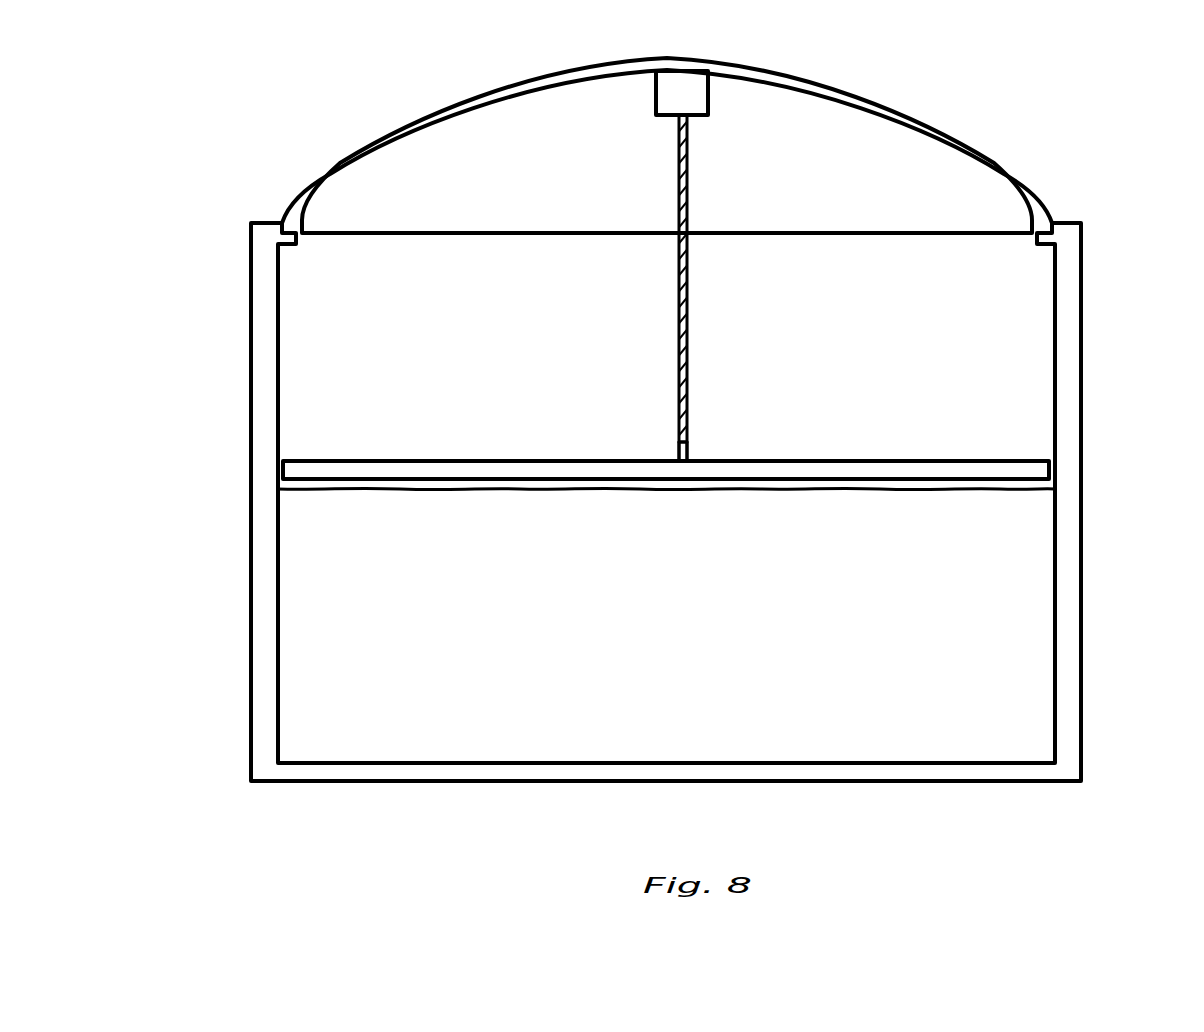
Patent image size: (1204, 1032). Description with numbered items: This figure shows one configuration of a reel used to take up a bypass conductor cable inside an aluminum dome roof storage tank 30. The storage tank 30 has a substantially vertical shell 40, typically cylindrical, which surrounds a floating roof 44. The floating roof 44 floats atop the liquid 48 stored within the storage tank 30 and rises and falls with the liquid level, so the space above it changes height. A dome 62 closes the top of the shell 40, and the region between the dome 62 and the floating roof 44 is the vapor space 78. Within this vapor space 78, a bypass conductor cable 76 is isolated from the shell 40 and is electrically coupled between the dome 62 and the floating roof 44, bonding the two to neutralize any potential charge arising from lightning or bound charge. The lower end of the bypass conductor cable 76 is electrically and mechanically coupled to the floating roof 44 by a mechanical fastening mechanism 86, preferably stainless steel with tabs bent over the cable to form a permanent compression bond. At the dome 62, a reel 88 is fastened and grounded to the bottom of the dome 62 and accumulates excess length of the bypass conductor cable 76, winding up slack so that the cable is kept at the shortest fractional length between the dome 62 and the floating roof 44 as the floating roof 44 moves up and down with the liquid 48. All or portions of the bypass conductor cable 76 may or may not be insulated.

The storage tank 30 is at (1055, 132).
The shell 40 is at (270, 318).
The dome 62 is at (463, 102).
The reel 88 is at (712, 104).
The bypass conductor cable 76 is at (687, 275).
The mechanical fastening mechanism 86 is at (677, 452).
The vapor space 78 is at (915, 333).
The floating roof 44 is at (425, 470).
The liquid 48 is at (689, 611).